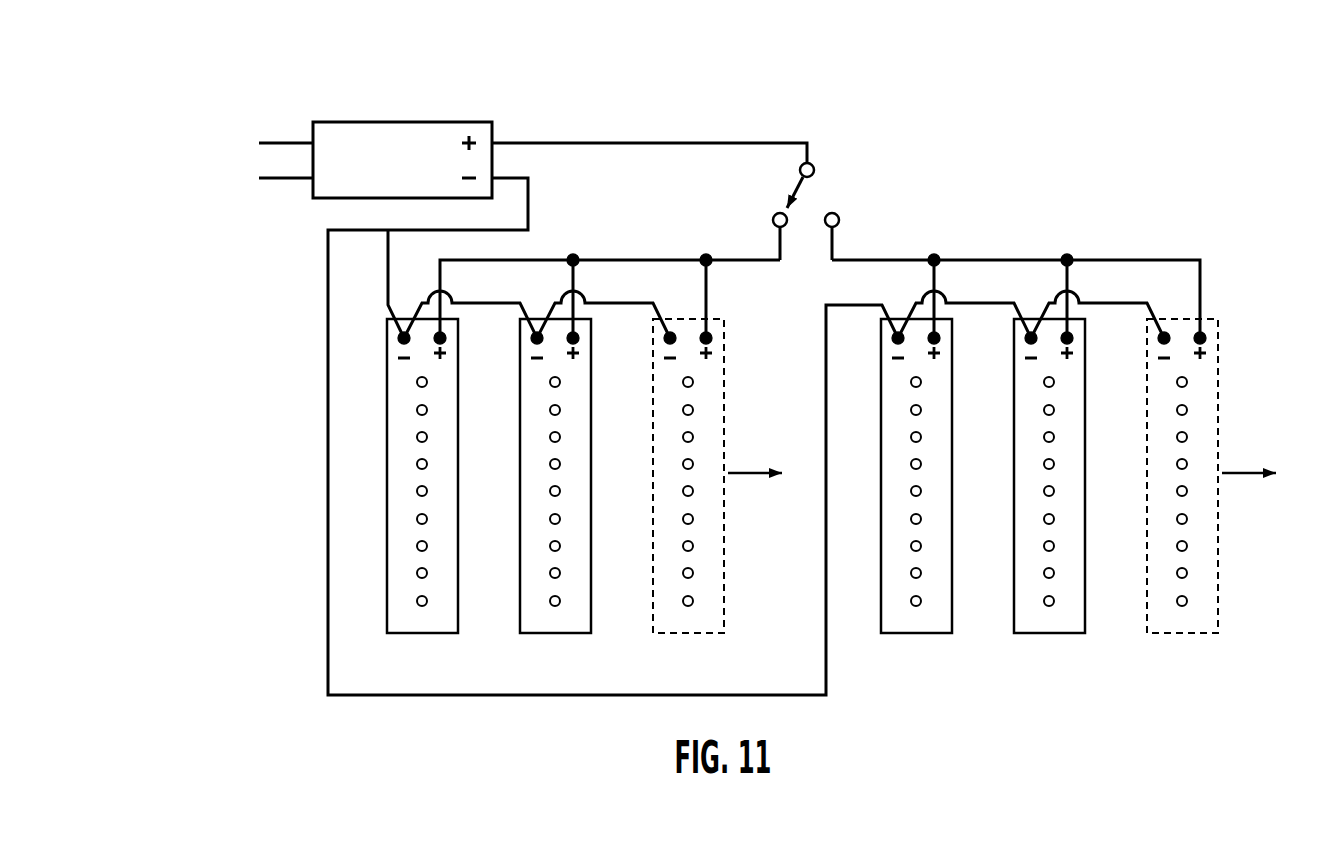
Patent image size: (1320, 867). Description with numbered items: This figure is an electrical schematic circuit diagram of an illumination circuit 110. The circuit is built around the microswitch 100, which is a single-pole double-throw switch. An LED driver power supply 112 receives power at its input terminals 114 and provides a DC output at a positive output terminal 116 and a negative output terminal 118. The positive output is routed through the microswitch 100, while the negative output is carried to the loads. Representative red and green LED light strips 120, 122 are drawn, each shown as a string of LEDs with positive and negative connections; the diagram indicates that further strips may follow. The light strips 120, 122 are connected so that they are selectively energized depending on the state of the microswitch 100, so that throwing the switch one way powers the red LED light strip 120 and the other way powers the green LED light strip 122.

The microswitch 100 is at (796, 198).
The illumination circuit 110 is at (1104, 155).
The LED driver power supply 112 is at (402, 122).
The input terminals 114 is at (270, 178).
The positive output terminal 116 is at (500, 138).
The negative output terminal 118 is at (510, 178).
The red LED light strip 120 is at (600, 590).
The green LED light strip 122 is at (1095, 590).